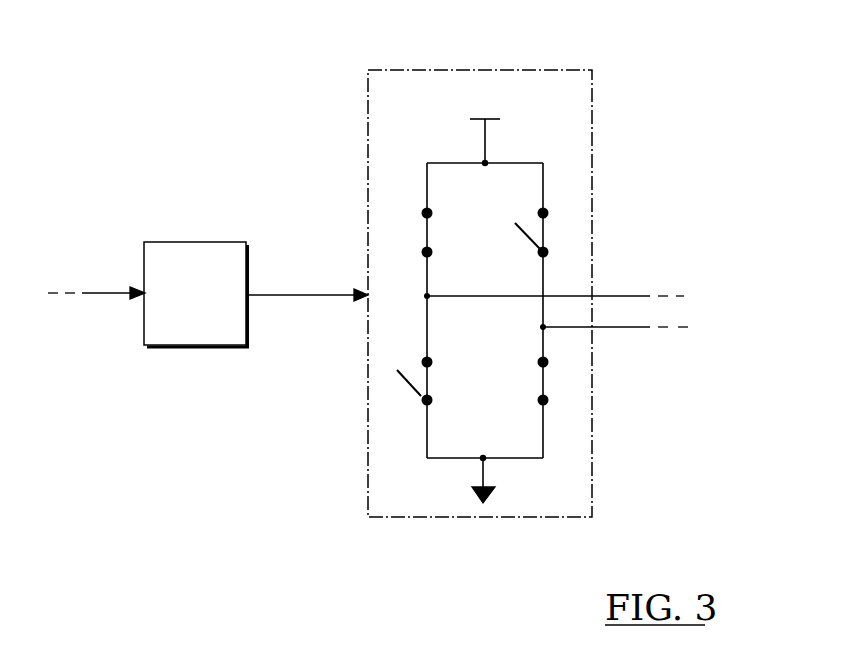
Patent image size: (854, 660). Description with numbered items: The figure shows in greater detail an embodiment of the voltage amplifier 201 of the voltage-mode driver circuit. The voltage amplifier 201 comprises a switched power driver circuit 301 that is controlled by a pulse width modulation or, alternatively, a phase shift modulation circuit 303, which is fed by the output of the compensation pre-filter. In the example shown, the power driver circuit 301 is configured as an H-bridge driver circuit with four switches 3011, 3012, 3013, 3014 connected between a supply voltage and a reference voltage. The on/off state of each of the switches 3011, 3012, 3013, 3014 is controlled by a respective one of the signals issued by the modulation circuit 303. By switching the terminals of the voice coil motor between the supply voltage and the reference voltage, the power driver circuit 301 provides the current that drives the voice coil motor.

The voltage amplifier 201 is at (368, 227).
The switched power driver circuit 301 is at (408, 69).
The PWM/PSM circuit 303 is at (144, 262).
The switch 3011 is at (425, 230).
The switch 3012 is at (545, 232).
The switch 3013 is at (403, 379).
The switch 3014 is at (546, 378).